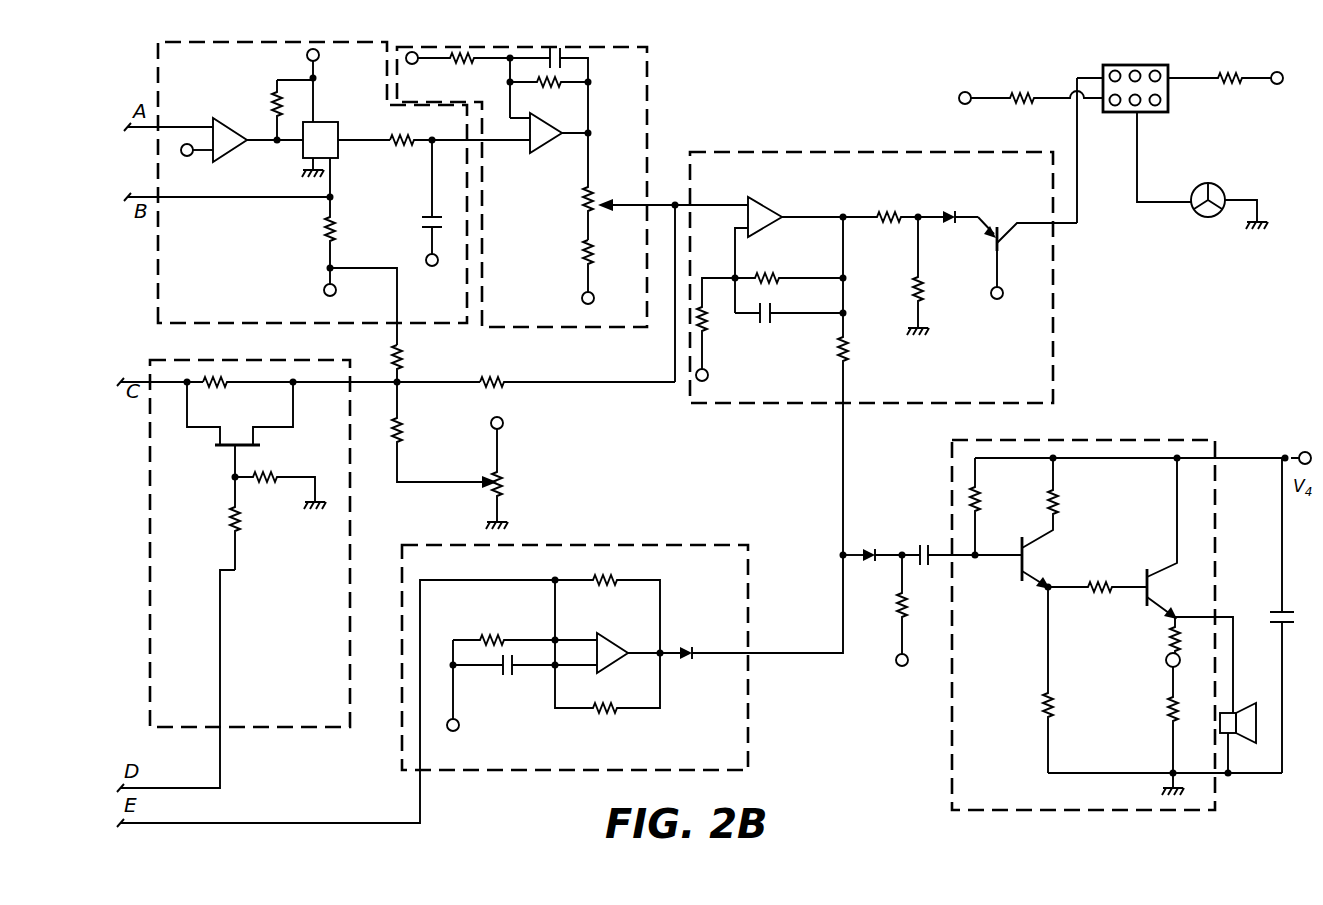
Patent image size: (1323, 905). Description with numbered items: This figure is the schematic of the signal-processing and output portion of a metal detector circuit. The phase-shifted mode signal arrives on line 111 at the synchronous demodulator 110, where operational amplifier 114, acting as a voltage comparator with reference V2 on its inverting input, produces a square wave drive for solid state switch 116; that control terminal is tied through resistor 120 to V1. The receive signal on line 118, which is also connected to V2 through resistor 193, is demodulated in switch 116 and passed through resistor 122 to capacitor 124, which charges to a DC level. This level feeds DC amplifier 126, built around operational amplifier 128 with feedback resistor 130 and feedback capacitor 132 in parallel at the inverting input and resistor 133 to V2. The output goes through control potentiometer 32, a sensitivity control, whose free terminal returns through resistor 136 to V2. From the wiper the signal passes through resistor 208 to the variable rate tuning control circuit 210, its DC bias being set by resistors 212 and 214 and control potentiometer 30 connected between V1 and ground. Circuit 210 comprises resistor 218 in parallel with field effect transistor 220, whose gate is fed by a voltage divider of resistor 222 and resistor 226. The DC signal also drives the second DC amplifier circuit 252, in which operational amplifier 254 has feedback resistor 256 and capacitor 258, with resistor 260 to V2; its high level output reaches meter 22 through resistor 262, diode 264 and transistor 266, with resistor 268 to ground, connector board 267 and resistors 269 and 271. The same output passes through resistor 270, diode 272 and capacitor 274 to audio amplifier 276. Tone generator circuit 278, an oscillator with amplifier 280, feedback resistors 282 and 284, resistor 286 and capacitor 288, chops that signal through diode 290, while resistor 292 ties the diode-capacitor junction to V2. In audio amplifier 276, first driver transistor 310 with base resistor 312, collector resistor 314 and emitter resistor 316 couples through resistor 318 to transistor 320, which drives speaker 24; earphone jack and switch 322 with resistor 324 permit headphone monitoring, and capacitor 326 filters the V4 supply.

The synchronous demodulator 110 is at (257, 326).
The line 111 is at (171, 127).
The operational amplifier 114 is at (232, 121).
The solid state switch 116 is at (335, 122).
The line 118 is at (170, 200).
The resistor 120 is at (274, 92).
The resistor 122 is at (406, 140).
The capacitor 124 is at (430, 217).
The DC amplifier 126 is at (573, 328).
The operational amplifier 128 is at (552, 152).
The feedback resistor 130 is at (539, 86).
The feedback capacitor 132 is at (566, 52).
The resistor 133 is at (465, 62).
The resistor 136 is at (578, 256).
The control potentiometer 32 is at (580, 203).
The resistor 193 is at (330, 230).
The resistor 208 is at (485, 382).
The variable rate tuning control circuit 210 is at (178, 360).
The resistor 212 is at (393, 357).
The resistor 214 is at (402, 428).
The control potentiometer 30 is at (508, 484).
The resistor 218 is at (216, 386).
The field effect transistor 220 is at (220, 442).
The resistor 222 is at (232, 522).
The resistor 226 is at (266, 476).
The second DC amplifier circuit 252 is at (727, 153).
The operational amplifier 254 is at (771, 204).
The resistor 256 is at (766, 273).
The capacitor 258 is at (773, 320).
The resistor 260 is at (707, 330).
The resistor 262 is at (893, 228).
The diode 264 is at (946, 212).
The transistor 266 is at (978, 228).
The resistor 268 is at (922, 292).
The resistor 270 is at (855, 352).
The resistor 269 is at (1026, 92).
The connector board 267 is at (1158, 112).
The resistor 271 is at (1232, 86).
The meter 22 is at (1212, 183).
The diode 272 is at (870, 549).
The capacitor 274 is at (922, 545).
The audio amplifier 276 is at (950, 753).
The tone generator circuit 278 is at (528, 771).
The amplifier 280 is at (612, 636).
The feedback resistor 282 is at (614, 581).
The feedback resistor 284 is at (603, 709).
The resistor 286 is at (489, 640).
The capacitor 288 is at (512, 676).
The diode 290 is at (689, 647).
The resistor 292 is at (891, 612).
The first driver transistor 310 is at (1040, 559).
The base resistor 312 is at (1004, 488).
The resistor 314 is at (1060, 494).
The resistor 316 is at (1044, 706).
The resistor 318 is at (1118, 578).
The transistor 320 is at (1136, 596).
The earphone jack and switch 322 is at (1166, 661).
The resistor 324 is at (1168, 714).
The capacitor 326 is at (1282, 611).
The speaker 24 is at (1240, 713).